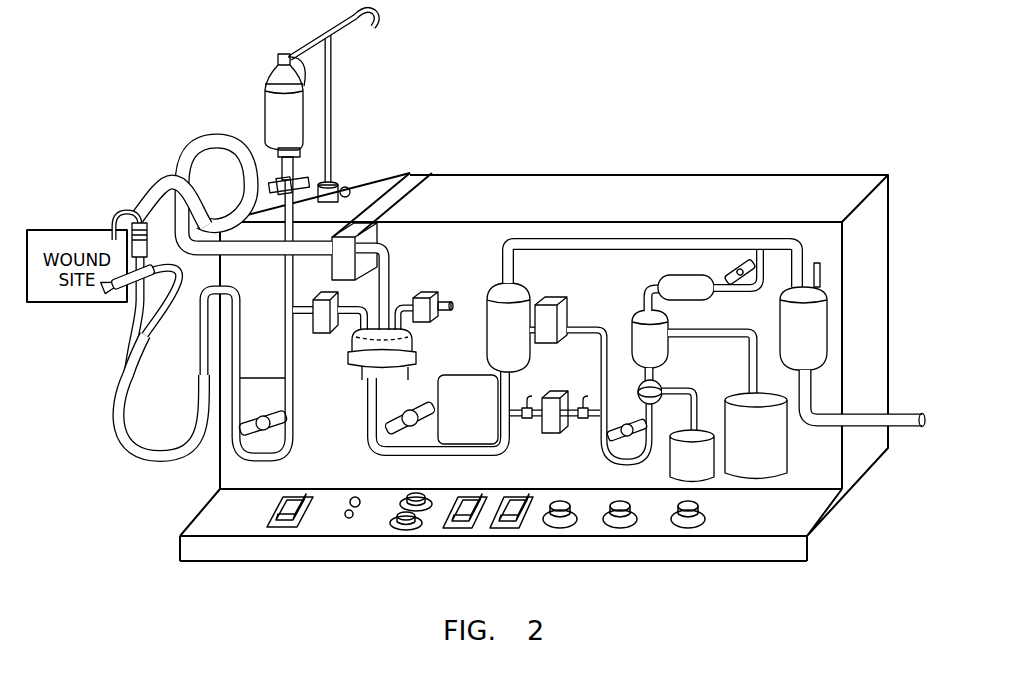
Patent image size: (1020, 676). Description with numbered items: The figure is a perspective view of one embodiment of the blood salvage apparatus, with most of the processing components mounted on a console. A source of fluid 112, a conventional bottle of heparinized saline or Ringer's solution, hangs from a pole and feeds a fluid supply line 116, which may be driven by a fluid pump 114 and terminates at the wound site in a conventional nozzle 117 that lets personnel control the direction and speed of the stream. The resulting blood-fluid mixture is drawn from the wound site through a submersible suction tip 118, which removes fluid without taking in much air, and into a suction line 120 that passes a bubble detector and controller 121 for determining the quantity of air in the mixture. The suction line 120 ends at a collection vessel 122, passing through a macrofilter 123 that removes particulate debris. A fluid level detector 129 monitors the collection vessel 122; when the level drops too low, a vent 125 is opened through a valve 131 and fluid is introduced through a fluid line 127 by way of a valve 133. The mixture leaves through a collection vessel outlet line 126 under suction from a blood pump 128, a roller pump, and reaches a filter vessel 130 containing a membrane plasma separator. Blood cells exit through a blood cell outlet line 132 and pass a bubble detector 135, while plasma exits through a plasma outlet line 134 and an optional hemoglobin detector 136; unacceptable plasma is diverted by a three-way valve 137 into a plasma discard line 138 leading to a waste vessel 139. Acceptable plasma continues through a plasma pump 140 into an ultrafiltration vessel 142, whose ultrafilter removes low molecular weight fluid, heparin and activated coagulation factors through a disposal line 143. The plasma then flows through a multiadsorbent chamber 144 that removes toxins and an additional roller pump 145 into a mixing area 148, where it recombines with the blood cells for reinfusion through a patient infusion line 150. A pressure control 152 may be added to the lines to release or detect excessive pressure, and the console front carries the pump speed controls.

The source of fluid 112 is at (272, 110).
The fluid pump 114 is at (250, 462).
The fluid supply line 116 is at (290, 207).
The nozzle 117 is at (120, 292).
The submersible suction tip 118 is at (123, 225).
The suction line 120 is at (168, 205).
The bubble detector and controller 121 is at (410, 182).
The collection vessel 122 is at (355, 370).
The macrofilter 123 is at (444, 383).
The vent 125 is at (398, 297).
The collection vessel outlet line 126 is at (376, 408).
The fluid line 127 is at (306, 312).
The blood pump 128 is at (376, 453).
The fluid level detector 129 is at (413, 361).
The filter vessel 130 is at (514, 348).
The valve 131 is at (431, 320).
The blood cell outlet line 132 is at (501, 266).
The valve 133 is at (326, 334).
The plasma outlet line 134 is at (592, 328).
The bubble detector 135 is at (810, 327).
The hemoglobin detector 136 is at (563, 270).
The three-way valve 137 is at (660, 388).
The plasma discard line 138 is at (698, 392).
The waste vessel 139 is at (697, 462).
The plasma pump 140 is at (620, 463).
The ultrafiltration vessel 142 is at (642, 305).
The disposal line 143 is at (812, 378).
The multiadsorbent chamber 144 is at (682, 290).
The roller pump 145 is at (741, 290).
The mixing area 148 is at (762, 250).
The patient infusion line 150 is at (835, 427).
The pressure control 152 is at (552, 424).